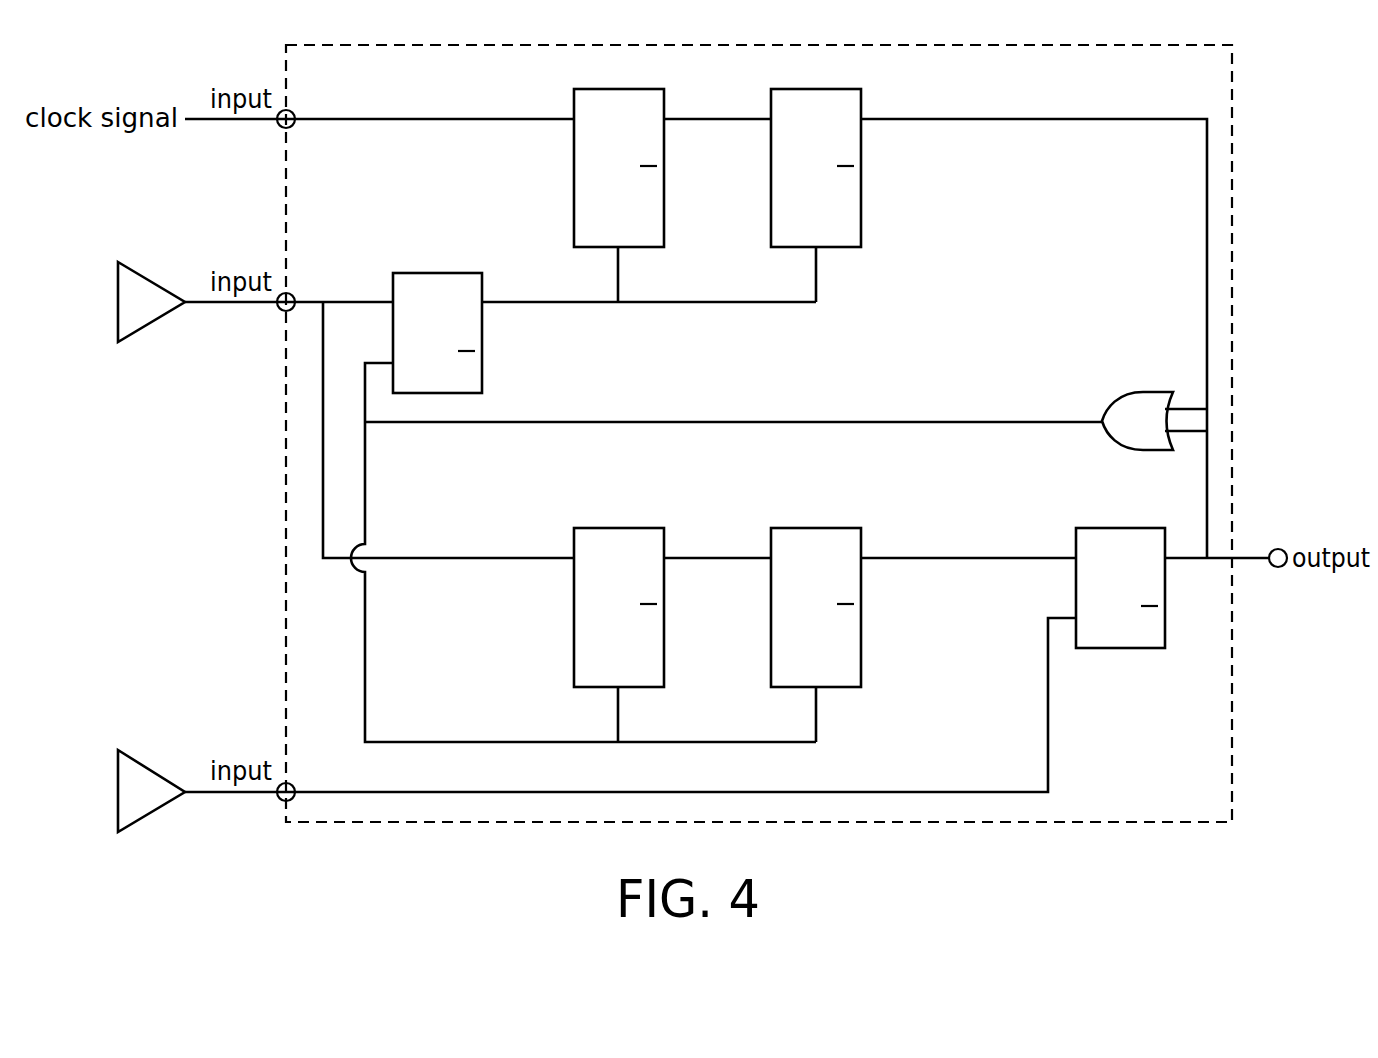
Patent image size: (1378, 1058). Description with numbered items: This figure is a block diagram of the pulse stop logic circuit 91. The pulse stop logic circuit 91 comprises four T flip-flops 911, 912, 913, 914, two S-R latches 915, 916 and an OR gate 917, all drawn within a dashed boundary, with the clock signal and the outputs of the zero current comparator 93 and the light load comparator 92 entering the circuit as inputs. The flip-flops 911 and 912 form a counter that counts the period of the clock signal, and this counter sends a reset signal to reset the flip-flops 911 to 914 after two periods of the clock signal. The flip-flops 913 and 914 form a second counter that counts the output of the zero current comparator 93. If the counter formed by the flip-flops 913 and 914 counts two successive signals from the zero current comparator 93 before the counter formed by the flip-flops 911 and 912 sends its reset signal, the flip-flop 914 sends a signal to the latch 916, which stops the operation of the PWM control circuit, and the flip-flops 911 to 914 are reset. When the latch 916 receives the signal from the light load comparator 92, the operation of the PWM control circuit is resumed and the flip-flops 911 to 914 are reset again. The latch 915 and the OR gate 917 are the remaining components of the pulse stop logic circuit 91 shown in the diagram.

The pulse stop logic circuit 91 is at (1232, 95).
The light load comparator 92 is at (152, 768).
The zero current comparator 93 is at (152, 278).
The T flip-flop 911 is at (619, 152).
The T flip-flop 912 is at (816, 152).
The T flip-flop 913 is at (619, 591).
The T flip-flop 914 is at (816, 591).
The S-R latch 915 is at (437, 316).
The S-R latch 916 is at (1120, 572).
The OR gate 917 is at (1137, 405).